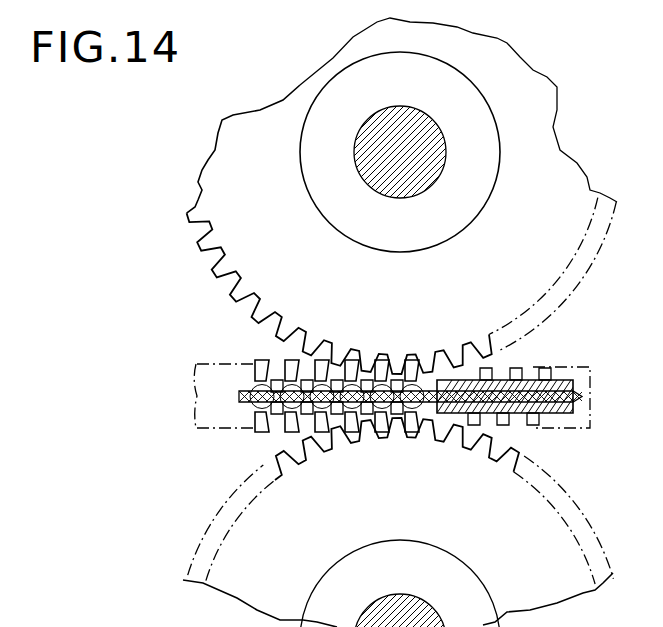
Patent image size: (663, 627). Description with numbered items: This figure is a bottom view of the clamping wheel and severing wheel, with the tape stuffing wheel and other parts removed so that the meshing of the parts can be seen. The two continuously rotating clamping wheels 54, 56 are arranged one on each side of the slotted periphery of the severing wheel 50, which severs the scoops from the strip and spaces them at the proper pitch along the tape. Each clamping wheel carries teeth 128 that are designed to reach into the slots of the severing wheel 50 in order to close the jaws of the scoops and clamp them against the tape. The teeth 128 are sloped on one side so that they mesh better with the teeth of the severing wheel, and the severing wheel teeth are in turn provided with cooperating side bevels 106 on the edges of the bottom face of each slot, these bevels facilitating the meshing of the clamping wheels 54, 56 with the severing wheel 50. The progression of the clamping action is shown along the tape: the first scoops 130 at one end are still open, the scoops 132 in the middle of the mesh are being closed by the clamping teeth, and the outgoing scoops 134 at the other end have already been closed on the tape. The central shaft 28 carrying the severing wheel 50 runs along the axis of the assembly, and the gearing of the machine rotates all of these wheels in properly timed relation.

The clamping wheel 54 is at (215, 163).
The clamping wheel 56 is at (560, 587).
The teeth 128 is at (238, 300).
The side bevels 106 is at (306, 362).
The first scoops 130 is at (517, 368).
The scoops being closed 132 is at (456, 414).
The outgoing scoops 134 is at (308, 406).
The severing wheel 50 is at (531, 440).
The worm shaft 28 is at (580, 397).